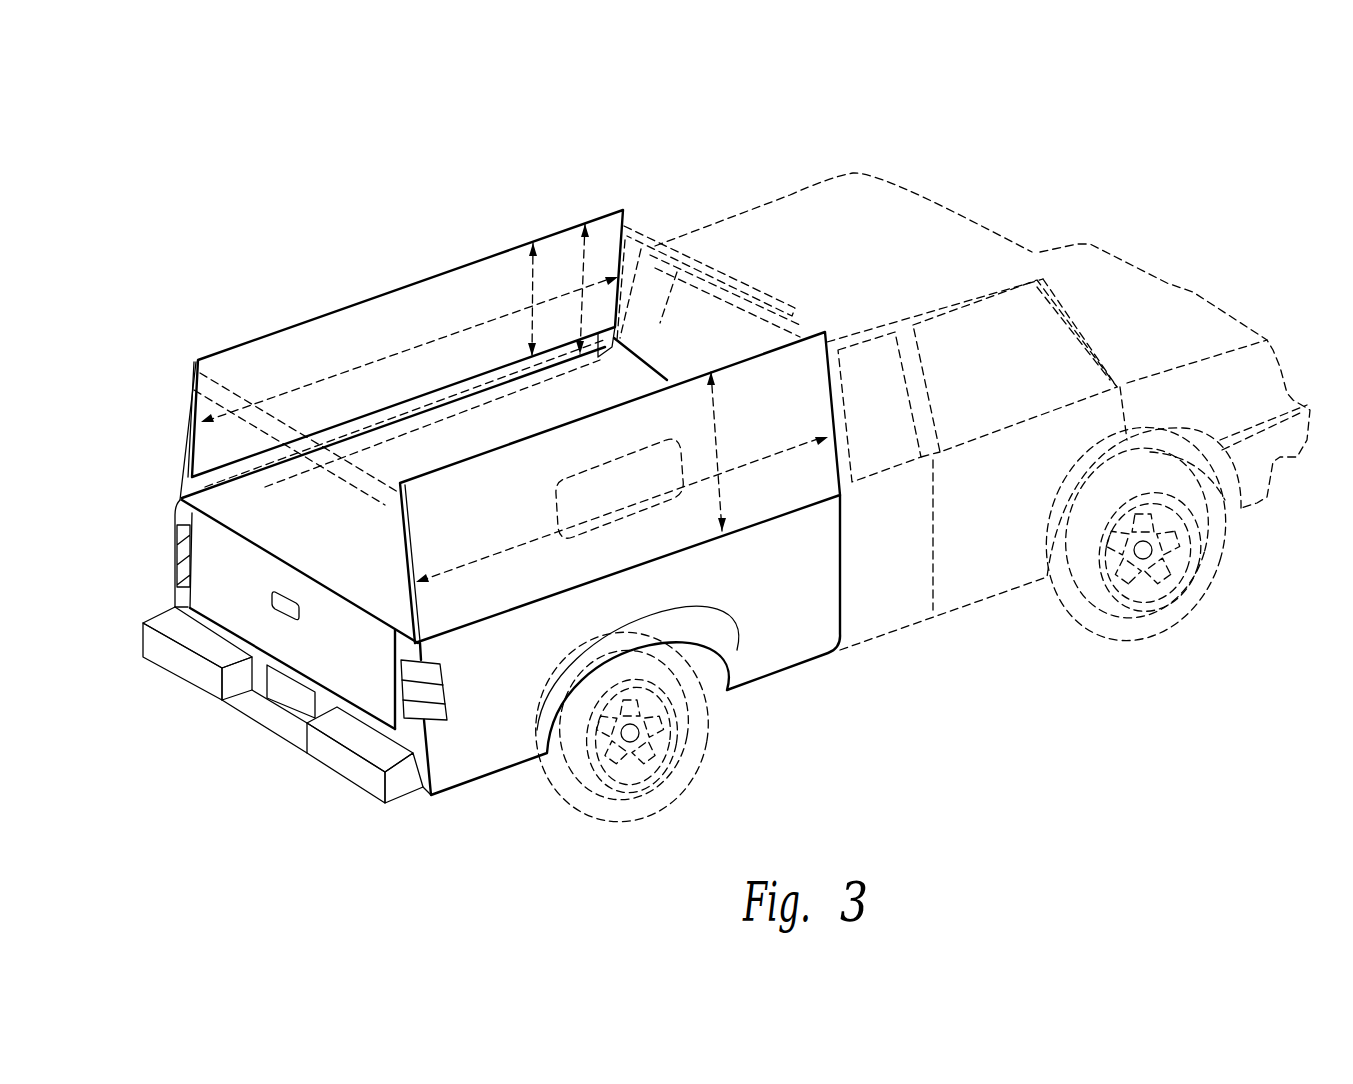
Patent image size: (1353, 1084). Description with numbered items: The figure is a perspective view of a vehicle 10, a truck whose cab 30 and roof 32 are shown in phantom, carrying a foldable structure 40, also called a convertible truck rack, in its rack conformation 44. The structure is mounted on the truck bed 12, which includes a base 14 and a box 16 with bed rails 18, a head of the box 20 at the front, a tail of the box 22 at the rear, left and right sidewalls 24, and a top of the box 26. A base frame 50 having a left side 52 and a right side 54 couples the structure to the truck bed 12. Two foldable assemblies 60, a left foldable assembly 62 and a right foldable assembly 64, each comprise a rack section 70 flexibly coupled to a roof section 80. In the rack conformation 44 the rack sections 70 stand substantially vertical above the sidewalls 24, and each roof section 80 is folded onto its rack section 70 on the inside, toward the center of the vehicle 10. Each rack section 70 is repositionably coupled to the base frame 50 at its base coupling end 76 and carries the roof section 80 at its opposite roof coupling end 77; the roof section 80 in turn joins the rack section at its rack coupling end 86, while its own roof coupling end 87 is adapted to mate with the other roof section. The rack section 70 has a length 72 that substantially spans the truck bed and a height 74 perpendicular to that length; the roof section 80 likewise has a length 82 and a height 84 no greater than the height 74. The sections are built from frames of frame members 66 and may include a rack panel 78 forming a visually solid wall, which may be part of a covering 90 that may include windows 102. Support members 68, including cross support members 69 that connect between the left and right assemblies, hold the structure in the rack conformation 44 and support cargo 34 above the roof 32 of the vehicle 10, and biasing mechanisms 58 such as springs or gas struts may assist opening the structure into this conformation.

The vehicle 10 is at (447, 122).
The truck bed 12 is at (813, 660).
The base of the truck bed 14 is at (380, 717).
The box of the truck bed 16 is at (843, 603).
The bed rails 18 is at (788, 514).
The head of the box 20 is at (843, 531).
The tail of the box 22 is at (380, 707).
The sidewalls of the box 24 is at (783, 670).
The top of the box 26 is at (314, 626).
The cab 30 is at (1193, 292).
The roof 32 is at (905, 192).
The cargo 34 is at (757, 288).
The foldable structure 40 is at (251, 328).
The rack conformation 44 is at (284, 228).
The base frame 50 is at (296, 565).
The left side 52 is at (227, 500).
The right side 54 is at (490, 618).
The biasing mechanisms 58 is at (606, 390).
The foldable assemblies 60 is at (197, 360).
The left foldable assembly 62 is at (232, 344).
The right foldable assembly 64 is at (403, 540).
The frame members 66 is at (236, 472).
The support members 68 is at (681, 281).
The cross support members 69 is at (652, 280).
The rack section 70 is at (194, 372).
The length of the rack section 72 is at (449, 334).
The height of the rack section 74 is at (580, 263).
The base coupling end 76 is at (178, 497).
The roof coupling end of the rack section 77 is at (196, 362).
The rack panel 78 is at (340, 308).
The roof section 80 is at (205, 447).
The length of the roof section 82 is at (386, 357).
The height of the roof section 84 is at (531, 275).
The rack coupling end 86 is at (197, 400).
The roof coupling end of the roof section 87 is at (194, 467).
The covering 90 is at (438, 475).
The windows 102 is at (567, 478).